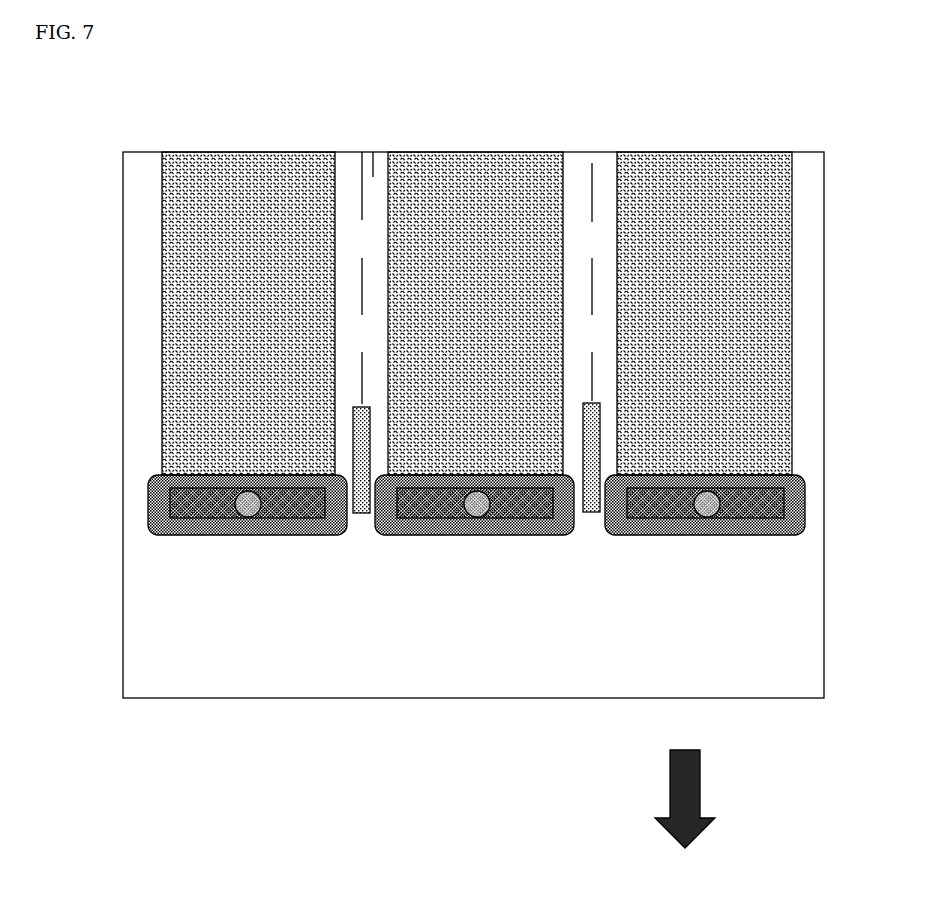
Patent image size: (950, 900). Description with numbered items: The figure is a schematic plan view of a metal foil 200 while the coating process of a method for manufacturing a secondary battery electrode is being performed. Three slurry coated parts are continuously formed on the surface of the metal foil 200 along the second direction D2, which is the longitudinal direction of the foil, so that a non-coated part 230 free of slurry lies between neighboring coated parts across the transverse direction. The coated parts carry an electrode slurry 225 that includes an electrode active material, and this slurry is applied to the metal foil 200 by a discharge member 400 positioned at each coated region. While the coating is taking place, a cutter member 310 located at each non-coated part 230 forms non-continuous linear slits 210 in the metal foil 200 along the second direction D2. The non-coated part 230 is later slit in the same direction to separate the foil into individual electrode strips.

The metal foil 200 is at (135, 174).
The electrode slurry 225 is at (233, 163).
The non-continuous linear slits 210 is at (362, 152).
The non-coated part 230 is at (373, 160).
The cutter member 310 is at (353, 413).
The discharge member 400 is at (152, 502).
The second direction D2 is at (700, 795).